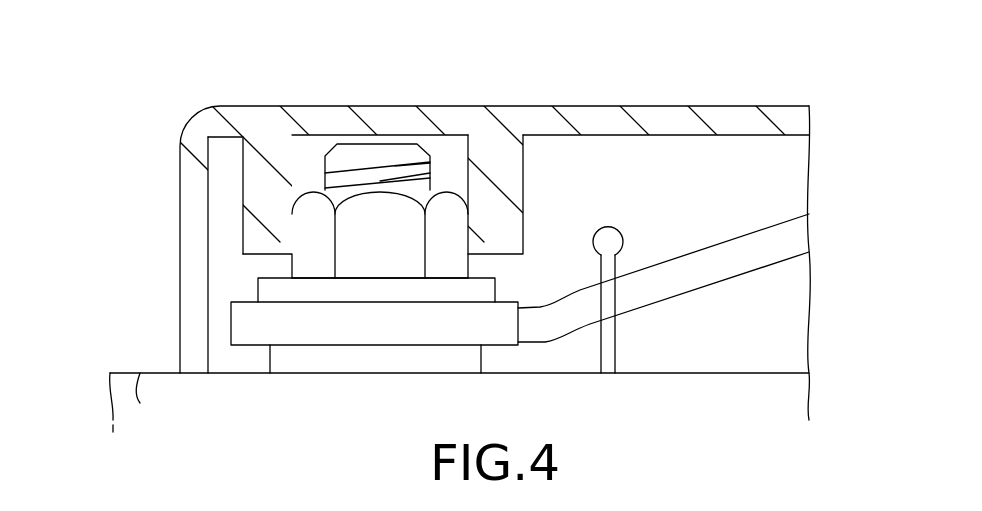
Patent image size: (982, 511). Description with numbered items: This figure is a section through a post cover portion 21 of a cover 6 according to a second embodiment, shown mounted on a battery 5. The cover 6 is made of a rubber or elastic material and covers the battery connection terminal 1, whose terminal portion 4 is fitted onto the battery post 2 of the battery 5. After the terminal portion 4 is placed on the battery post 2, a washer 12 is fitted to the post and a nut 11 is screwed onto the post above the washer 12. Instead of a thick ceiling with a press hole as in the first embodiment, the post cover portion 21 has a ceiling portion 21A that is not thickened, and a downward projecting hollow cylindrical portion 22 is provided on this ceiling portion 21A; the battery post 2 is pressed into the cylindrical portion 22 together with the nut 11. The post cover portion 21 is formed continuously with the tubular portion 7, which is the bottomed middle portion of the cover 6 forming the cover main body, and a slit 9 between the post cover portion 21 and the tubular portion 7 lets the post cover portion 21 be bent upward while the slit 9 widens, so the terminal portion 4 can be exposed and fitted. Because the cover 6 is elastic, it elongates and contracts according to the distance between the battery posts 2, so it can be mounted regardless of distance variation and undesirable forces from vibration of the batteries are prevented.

The battery connection terminal 1 is at (698, 312).
The battery post 2 is at (408, 150).
The terminal portion 4 is at (268, 320).
The battery 5 is at (140, 373).
The cover 6 is at (682, 84).
The tubular portion 7 is at (773, 105).
The slit 9 is at (597, 352).
The nut 11 is at (307, 208).
The washer 12 is at (265, 295).
The post cover portion 21 is at (357, 105).
The ceiling portion 21A is at (233, 136).
The hollow cylindrical portion 22 is at (533, 170).